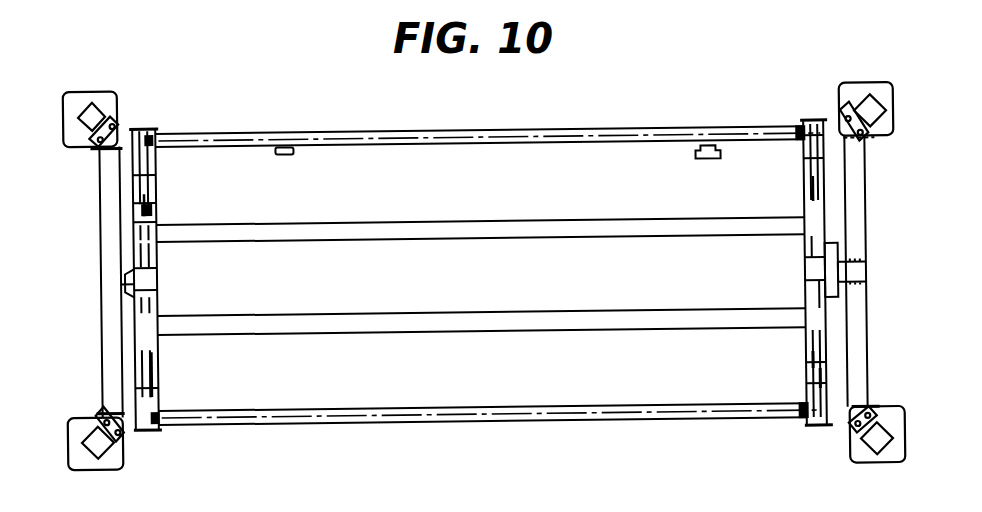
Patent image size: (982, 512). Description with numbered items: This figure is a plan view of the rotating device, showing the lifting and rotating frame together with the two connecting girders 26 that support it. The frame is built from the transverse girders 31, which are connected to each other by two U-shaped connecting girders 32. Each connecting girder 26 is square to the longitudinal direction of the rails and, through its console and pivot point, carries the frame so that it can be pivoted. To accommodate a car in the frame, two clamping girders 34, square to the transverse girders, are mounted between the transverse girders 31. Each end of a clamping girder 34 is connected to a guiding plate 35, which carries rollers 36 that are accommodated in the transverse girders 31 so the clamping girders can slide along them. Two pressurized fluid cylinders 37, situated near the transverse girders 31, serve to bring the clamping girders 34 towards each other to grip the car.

The connecting girder 26 is at (100, 332).
The transverse girder 31 is at (155, 182).
The U-shaped connecting girder 32 is at (325, 222).
The clamping girder 34 is at (708, 413).
The guiding plate 35 is at (814, 382).
The roller 36 is at (814, 364).
The pressurized fluid cylinder 37 is at (152, 209).